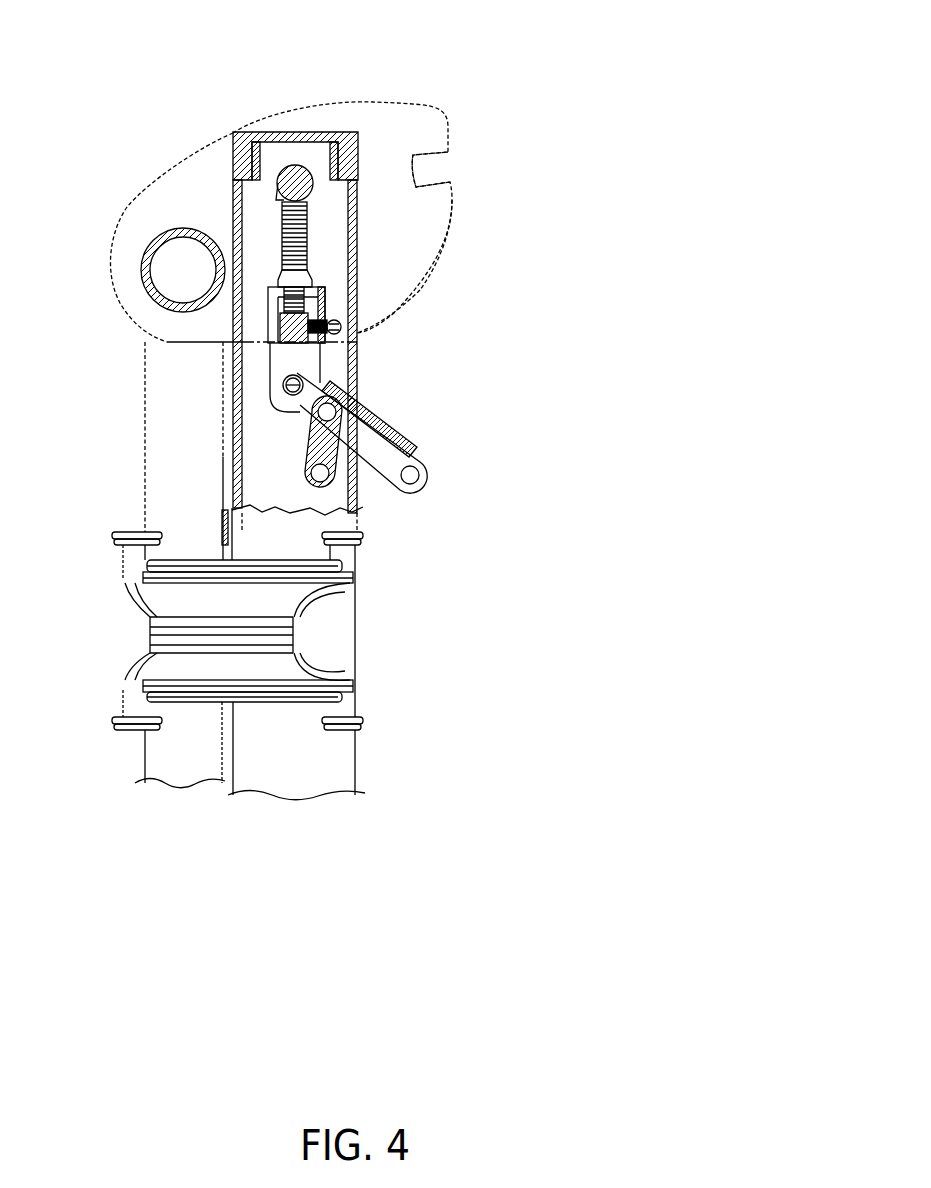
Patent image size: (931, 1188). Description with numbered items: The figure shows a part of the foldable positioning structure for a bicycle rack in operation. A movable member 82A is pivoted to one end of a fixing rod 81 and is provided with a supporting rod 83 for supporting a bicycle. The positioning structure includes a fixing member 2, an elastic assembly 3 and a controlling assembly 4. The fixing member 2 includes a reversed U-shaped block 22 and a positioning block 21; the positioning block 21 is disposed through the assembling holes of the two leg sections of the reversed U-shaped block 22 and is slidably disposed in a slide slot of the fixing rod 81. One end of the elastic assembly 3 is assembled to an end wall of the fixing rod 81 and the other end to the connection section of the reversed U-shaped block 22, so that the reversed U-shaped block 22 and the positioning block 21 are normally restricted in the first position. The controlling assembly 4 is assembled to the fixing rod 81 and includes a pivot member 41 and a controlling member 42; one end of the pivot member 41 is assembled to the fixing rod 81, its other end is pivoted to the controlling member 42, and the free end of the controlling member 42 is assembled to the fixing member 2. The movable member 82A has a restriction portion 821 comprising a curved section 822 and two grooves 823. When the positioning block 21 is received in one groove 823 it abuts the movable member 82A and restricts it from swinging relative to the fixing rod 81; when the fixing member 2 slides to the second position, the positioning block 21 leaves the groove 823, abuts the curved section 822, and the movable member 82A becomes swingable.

The movable member 82A is at (385, 122).
The grooves 823 is at (420, 172).
The restriction portion 821 is at (412, 222).
The curved section 822 is at (405, 300).
The elastic assembly 3 is at (307, 243).
The fixing member 2 is at (525, 330).
The positioning block 21 is at (320, 341).
The reversed U-shaped block 22 is at (303, 362).
The controlling assembly 4 is at (525, 453).
The pivot member 41 is at (380, 492).
The controlling member 42 is at (405, 456).
The supporting rod 83 is at (163, 430).
The fixing rod 81 is at (337, 765).